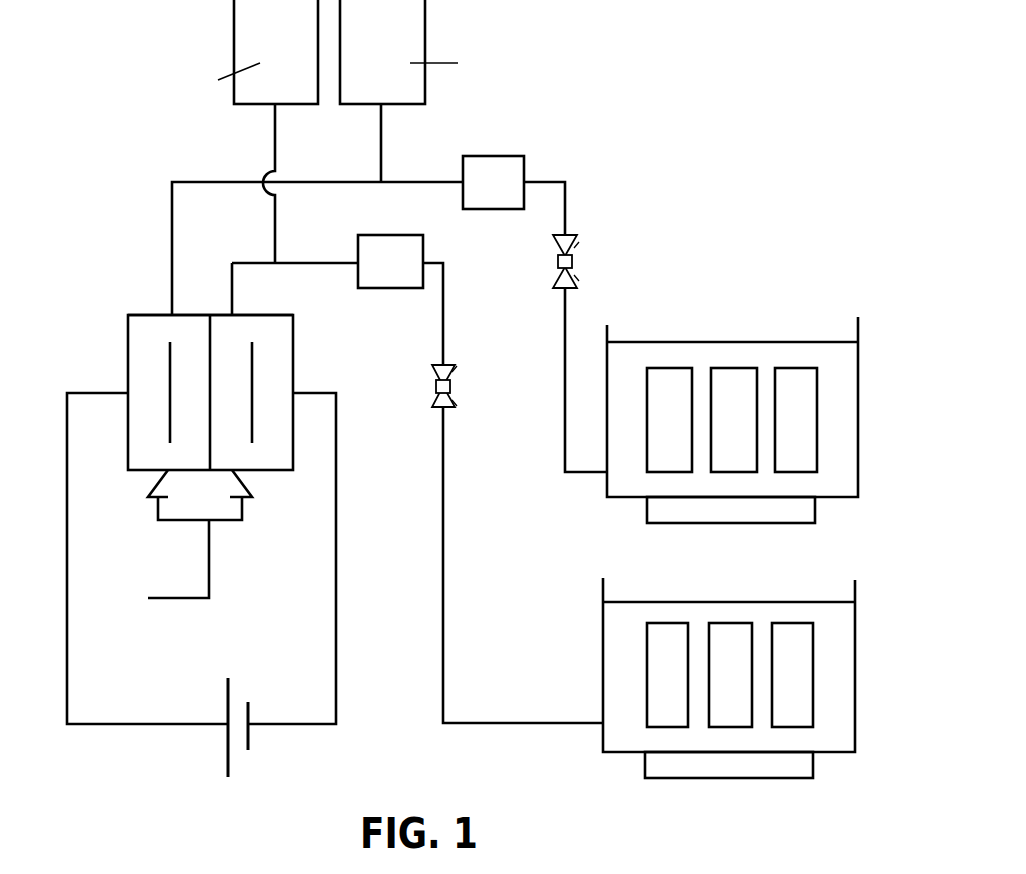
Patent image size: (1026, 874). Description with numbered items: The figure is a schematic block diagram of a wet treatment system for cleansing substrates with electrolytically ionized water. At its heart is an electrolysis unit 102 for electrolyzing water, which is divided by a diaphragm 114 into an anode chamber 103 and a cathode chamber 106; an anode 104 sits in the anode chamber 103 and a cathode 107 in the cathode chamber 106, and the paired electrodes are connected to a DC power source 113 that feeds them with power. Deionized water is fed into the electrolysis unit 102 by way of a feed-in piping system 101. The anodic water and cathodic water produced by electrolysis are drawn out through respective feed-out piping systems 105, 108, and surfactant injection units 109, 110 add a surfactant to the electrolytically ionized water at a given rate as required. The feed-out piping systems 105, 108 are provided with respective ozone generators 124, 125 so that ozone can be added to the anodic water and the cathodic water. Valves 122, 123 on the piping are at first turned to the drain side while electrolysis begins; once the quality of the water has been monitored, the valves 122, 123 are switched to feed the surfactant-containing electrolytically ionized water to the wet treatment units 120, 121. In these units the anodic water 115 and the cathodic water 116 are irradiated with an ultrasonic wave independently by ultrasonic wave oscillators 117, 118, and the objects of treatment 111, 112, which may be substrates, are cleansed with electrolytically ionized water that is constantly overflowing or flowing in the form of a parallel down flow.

The feed-in piping system 101 is at (165, 604).
The electrolysis unit 102 is at (126, 421).
The anode chamber 103 is at (187, 394).
The anode 104 is at (167, 374).
The feed-out piping system 105 is at (168, 224).
The cathode chamber 106 is at (239, 448).
The cathode 107 is at (254, 367).
The feed-out piping system 108 is at (447, 491).
The surfactant injection unit 109 is at (410, 36).
The surfactant injection unit 110 is at (258, 40).
The object of treatment 111 is at (804, 383).
The object of treatment 112 is at (799, 650).
The DC power source 113 is at (223, 751).
The diaphragm 114 is at (207, 419).
The anodic water 115 is at (687, 357).
The cleaning bath liquid 116 is at (692, 613).
The ultrasonic wave oscillator 117 is at (791, 511).
The ultrasonic wave oscillator 118 is at (773, 769).
The wet treatment unit 120 is at (734, 329).
The wet treatment unit 121 is at (597, 671).
The valve 122 is at (571, 273).
The valve 123 is at (452, 414).
The ozone generator 124 is at (491, 166).
The ozone generator 125 is at (397, 242).